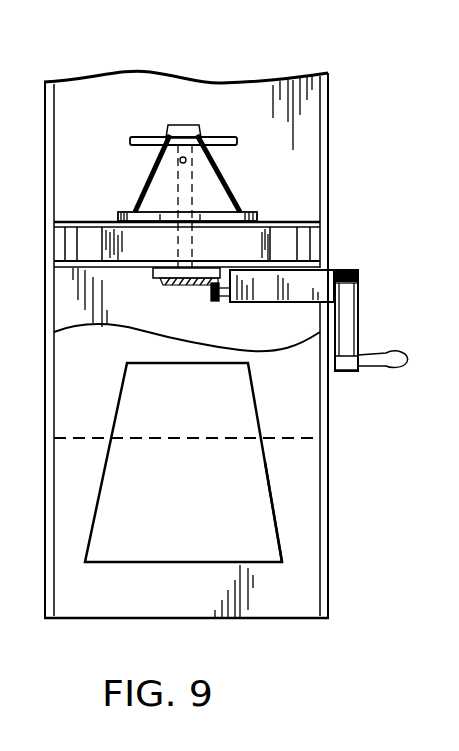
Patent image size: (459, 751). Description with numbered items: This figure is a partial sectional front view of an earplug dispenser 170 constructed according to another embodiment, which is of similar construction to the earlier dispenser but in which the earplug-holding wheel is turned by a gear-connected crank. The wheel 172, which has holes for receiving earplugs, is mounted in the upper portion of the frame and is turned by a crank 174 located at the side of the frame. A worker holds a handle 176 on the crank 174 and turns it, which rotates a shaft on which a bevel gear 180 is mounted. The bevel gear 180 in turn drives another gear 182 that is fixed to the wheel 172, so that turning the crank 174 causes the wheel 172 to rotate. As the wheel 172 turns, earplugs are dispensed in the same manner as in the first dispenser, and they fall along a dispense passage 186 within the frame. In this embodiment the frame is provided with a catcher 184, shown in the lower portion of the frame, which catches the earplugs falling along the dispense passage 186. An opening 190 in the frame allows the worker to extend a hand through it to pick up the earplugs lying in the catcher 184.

The earplug dispenser 170 is at (232, 70).
The wheel 172 is at (274, 209).
The crank 174 is at (352, 313).
The handle 176 is at (440, 388).
The bevel gear 180 is at (213, 302).
The gear 182 is at (160, 272).
The catcher 184 is at (257, 512).
The dispense passage 186 is at (203, 262).
The opening 190 is at (283, 535).